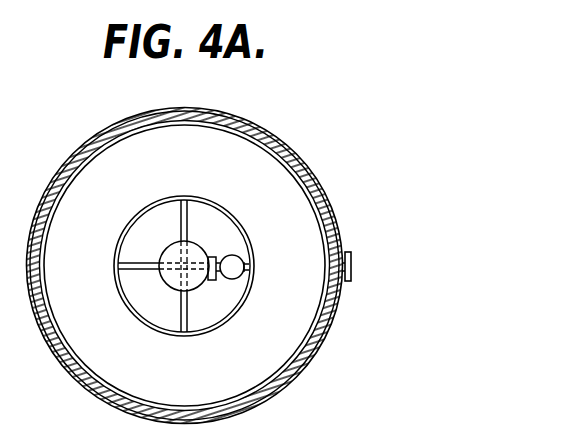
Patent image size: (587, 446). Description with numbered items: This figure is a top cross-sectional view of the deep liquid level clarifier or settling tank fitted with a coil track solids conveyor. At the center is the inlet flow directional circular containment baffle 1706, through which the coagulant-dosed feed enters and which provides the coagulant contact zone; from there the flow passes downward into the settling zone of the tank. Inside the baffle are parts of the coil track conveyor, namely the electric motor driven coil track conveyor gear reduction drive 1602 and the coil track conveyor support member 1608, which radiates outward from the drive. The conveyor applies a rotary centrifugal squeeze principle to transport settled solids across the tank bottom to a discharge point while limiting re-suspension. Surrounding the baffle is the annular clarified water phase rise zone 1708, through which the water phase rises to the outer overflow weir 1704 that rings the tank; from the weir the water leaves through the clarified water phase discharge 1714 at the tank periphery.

The overflow weir 1704 is at (84, 153).
The clarified water phase rise zone 1708 is at (93, 275).
The inlet flow directional circular containment baffle 1706 is at (243, 222).
The coil track conveyor support member 1608 is at (194, 212).
The coil track conveyor gear reduction drive 1602 is at (201, 250).
The clarified water phase discharge 1714 is at (348, 284).